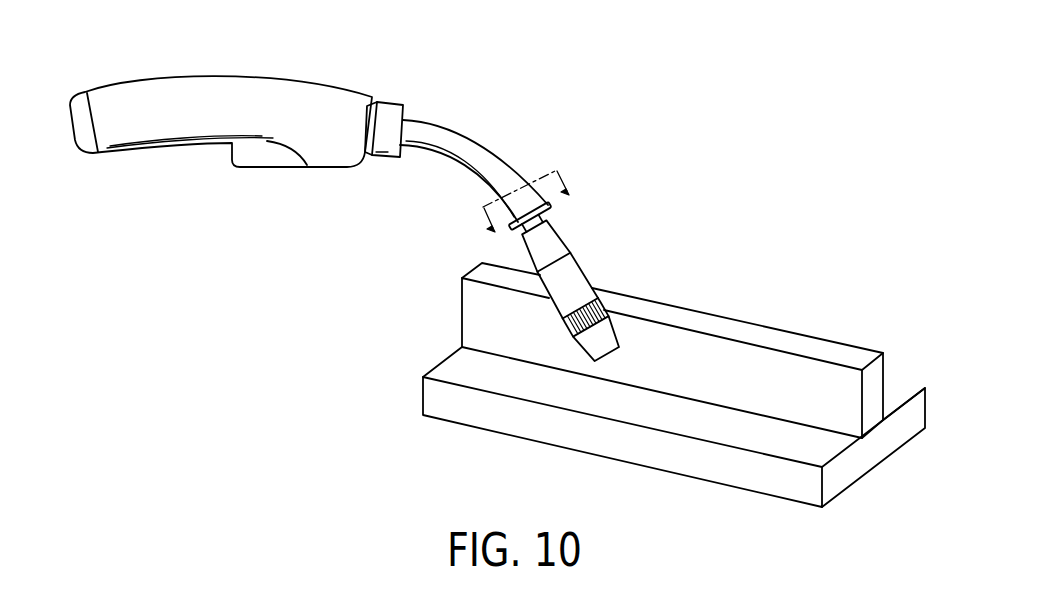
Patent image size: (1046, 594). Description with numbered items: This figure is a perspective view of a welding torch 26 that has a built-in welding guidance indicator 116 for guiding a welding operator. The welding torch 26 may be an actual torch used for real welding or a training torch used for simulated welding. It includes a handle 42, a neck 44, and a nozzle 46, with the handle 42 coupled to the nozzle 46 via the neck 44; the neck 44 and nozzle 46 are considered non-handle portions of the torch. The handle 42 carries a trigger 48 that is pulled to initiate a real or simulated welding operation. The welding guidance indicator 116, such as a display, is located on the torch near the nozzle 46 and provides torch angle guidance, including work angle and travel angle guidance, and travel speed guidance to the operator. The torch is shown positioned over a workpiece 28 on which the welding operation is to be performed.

The welding torch 26 is at (298, 248).
The handle 42 is at (255, 88).
The trigger 48 is at (253, 157).
The neck 44 is at (503, 165).
The welding guidance indicator 116 is at (563, 208).
The nozzle 46 is at (572, 280).
The workpiece 28 is at (748, 360).